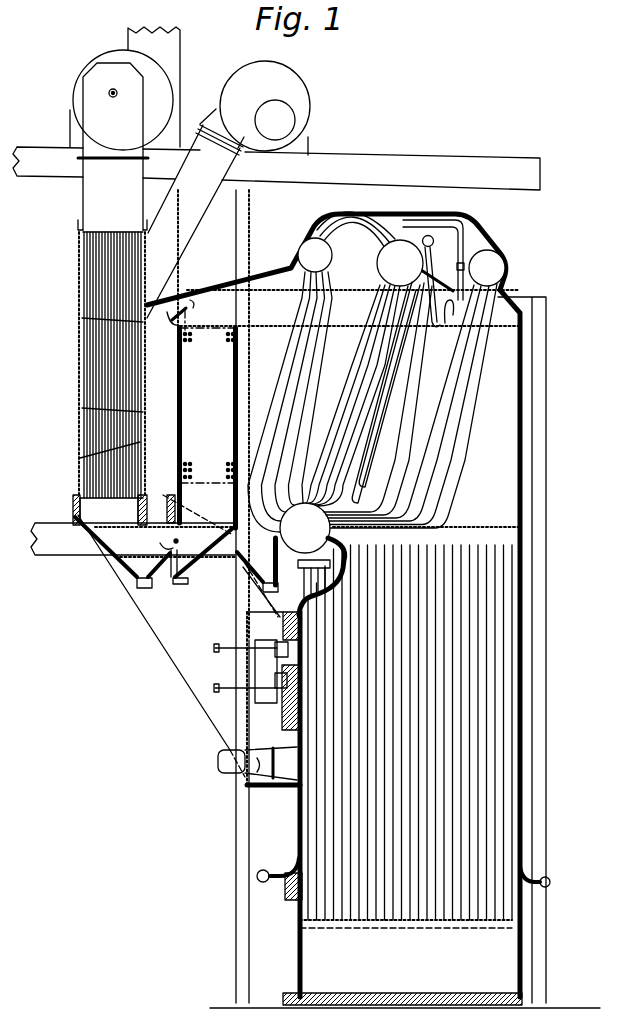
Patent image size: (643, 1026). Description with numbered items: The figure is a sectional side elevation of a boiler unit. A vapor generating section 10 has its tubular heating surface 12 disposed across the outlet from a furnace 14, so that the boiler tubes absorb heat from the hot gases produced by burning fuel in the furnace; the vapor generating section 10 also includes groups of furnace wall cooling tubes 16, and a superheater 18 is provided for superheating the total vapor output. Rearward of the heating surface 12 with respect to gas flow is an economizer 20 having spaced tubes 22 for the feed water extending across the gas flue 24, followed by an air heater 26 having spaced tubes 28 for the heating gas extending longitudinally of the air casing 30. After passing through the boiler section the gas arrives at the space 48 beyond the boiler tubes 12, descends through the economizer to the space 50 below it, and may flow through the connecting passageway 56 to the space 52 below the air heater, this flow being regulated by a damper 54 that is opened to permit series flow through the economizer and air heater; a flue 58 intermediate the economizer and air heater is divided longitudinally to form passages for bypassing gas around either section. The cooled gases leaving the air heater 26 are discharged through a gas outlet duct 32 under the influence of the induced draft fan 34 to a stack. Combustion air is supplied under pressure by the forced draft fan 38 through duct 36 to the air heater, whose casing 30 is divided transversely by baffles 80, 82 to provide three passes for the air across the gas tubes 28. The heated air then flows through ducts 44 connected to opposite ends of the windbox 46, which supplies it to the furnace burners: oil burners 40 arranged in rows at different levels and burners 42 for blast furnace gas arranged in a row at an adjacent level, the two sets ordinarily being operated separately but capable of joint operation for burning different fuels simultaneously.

The vapor generating section 10 is at (441, 447).
The tubular heating surface 12 is at (354, 384).
The furnace 14 is at (408, 754).
The furnace wall cooling tubes 16 is at (304, 812).
The superheater 18 is at (423, 404).
The economizer 20 is at (212, 380).
The spaced tubes 22 is at (228, 338).
The gas flue 24 is at (234, 397).
The air heater 26 is at (78, 340).
The spaced tubes 28 is at (92, 368).
The air casing 30 is at (78, 453).
The gas outlet duct 32 is at (82, 192).
The induced draft fan 34 is at (72, 82).
The duct 36 is at (197, 236).
The forced draft fan 38 is at (312, 100).
The oil burners 40 is at (262, 690).
The burners 42 is at (245, 778).
The ducts 44 is at (159, 640).
The windbox 46 is at (262, 715).
The space 48 is at (232, 319).
The space 50 is at (220, 517).
The space 52 is at (120, 520).
The damper 54 is at (176, 541).
The connecting passageway 56 is at (170, 535).
The flue 58 is at (169, 388).
The baffle 80 is at (92, 310).
The baffle 82 is at (92, 412).